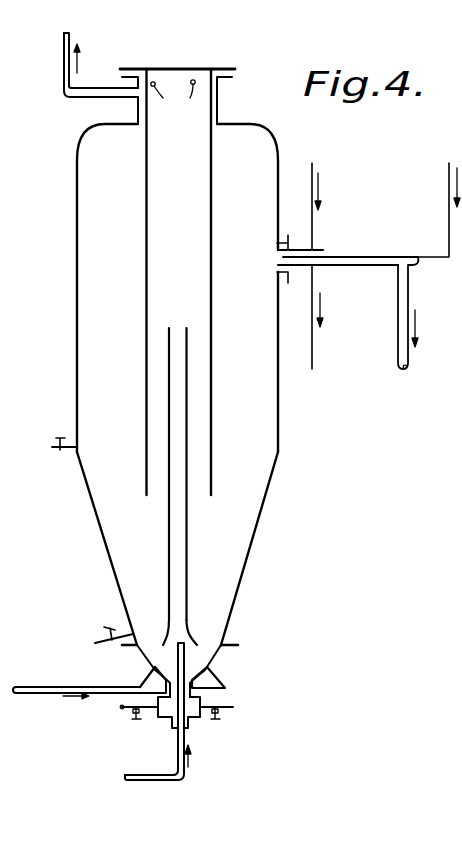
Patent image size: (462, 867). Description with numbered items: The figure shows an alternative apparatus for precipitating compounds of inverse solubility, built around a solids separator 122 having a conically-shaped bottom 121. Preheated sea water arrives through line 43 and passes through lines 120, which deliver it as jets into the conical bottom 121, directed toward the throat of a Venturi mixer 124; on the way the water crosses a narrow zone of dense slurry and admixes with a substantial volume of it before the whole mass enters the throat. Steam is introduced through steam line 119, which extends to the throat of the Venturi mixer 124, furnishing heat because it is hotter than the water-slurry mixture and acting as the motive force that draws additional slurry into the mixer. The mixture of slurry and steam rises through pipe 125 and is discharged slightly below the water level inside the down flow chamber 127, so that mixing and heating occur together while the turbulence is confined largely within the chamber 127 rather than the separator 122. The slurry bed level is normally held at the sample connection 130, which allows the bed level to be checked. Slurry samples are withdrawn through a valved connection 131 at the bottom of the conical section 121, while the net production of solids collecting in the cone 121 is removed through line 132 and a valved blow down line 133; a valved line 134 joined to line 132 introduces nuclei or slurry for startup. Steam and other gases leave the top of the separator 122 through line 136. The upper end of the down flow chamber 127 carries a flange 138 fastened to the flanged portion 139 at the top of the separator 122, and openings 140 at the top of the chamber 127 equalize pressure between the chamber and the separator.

The line 43 is at (37, 687).
The steam line 119 is at (153, 775).
The lines 120 is at (142, 672).
The conically-shaped bottom 121 is at (268, 495).
The solids separator 122 is at (78, 243).
The Venturi mixer 124 is at (169, 590).
The pipe 125 is at (168, 358).
The down flow chamber 127 is at (146, 203).
The sample connection 130 is at (70, 445).
The valved connection 131 is at (113, 628).
The line 132 is at (192, 696).
The valved blow down line 133 is at (230, 713).
The valved line 134 is at (124, 712).
The line 136 is at (63, 86).
The flange 138 is at (168, 69).
The flanged portion 139 is at (227, 80).
The openings 140 is at (173, 98).